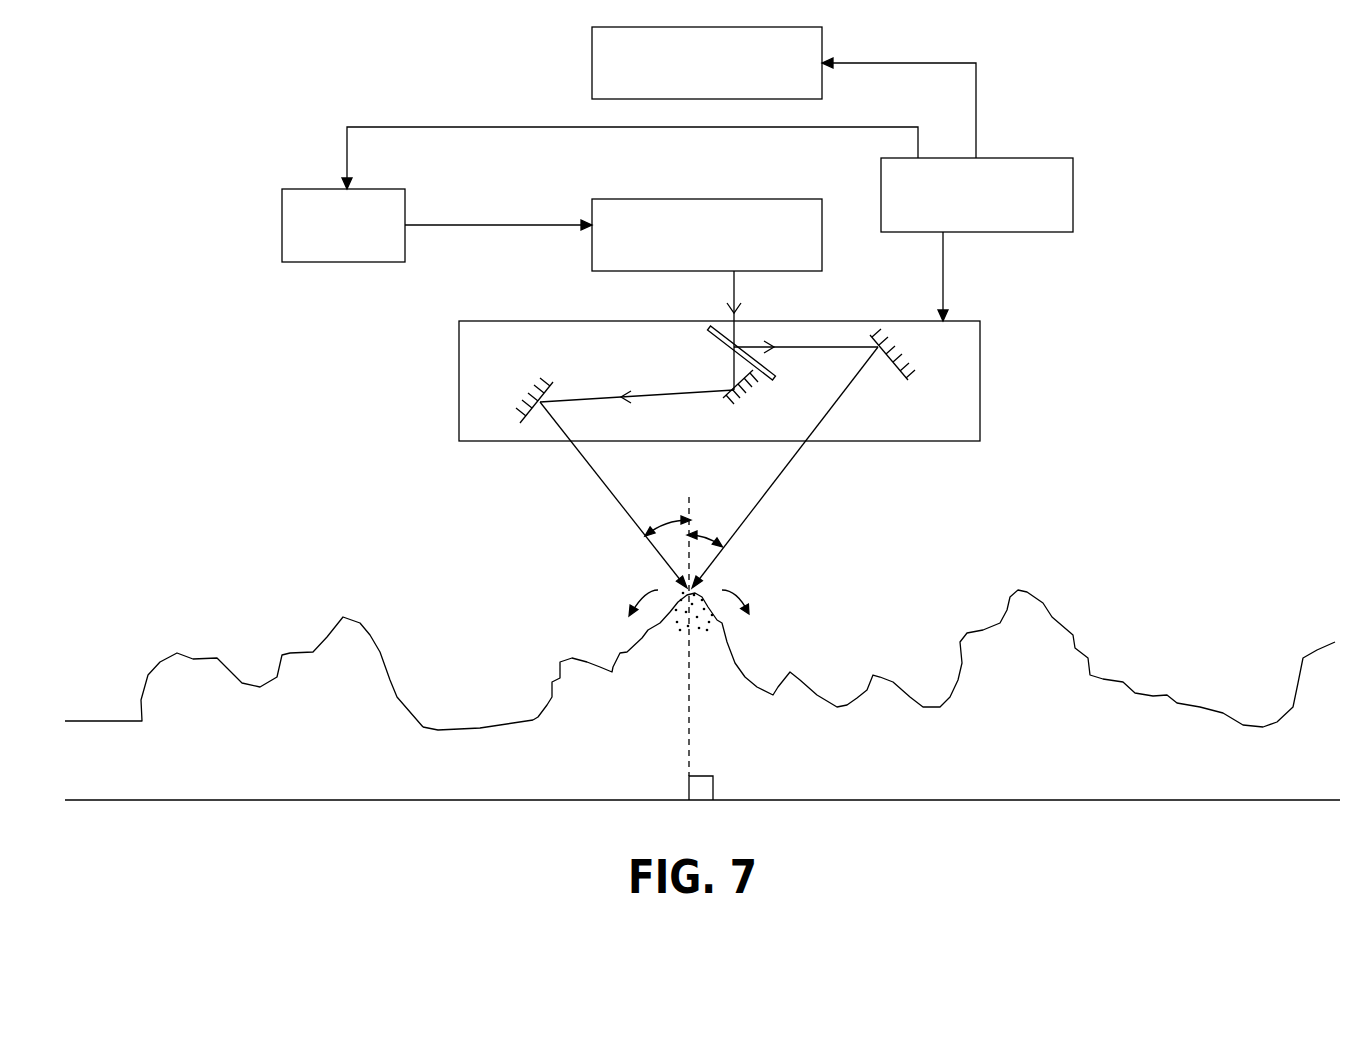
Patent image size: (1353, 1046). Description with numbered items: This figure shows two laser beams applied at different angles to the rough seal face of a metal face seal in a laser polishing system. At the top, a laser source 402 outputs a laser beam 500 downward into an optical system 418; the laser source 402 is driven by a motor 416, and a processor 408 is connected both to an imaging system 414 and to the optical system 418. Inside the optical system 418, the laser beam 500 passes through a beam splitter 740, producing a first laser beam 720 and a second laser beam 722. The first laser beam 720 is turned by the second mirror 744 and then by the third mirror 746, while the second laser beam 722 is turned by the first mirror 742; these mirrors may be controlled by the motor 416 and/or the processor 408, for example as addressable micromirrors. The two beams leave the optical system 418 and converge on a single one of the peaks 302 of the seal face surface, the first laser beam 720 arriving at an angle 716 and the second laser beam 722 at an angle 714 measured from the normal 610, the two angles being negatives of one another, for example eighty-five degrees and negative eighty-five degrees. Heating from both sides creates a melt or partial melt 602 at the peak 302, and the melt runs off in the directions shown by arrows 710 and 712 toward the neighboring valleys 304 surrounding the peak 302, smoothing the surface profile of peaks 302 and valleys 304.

The imaging system 414 is at (689, 85).
The motor 416 is at (325, 251).
The laser source 402 is at (689, 262).
The processor 408 is at (959, 219).
The laser beam 500 is at (736, 290).
The optical system 418 is at (980, 357).
The beam splitter 740 is at (778, 380).
The second laser beam 722 is at (803, 346).
The first mirror 742 is at (900, 383).
The second mirror 744 is at (722, 402).
The third mirror 746 is at (550, 388).
The first laser beam 720 is at (658, 390).
The normal 610 is at (692, 497).
The angle 716 is at (672, 521).
The angle 714 is at (708, 538).
The peak 302 is at (343, 617).
The arrow 712 is at (740, 596).
The arrow 710 is at (640, 597).
The melt or partial melt 602 is at (708, 624).
The valley 304 is at (485, 727).